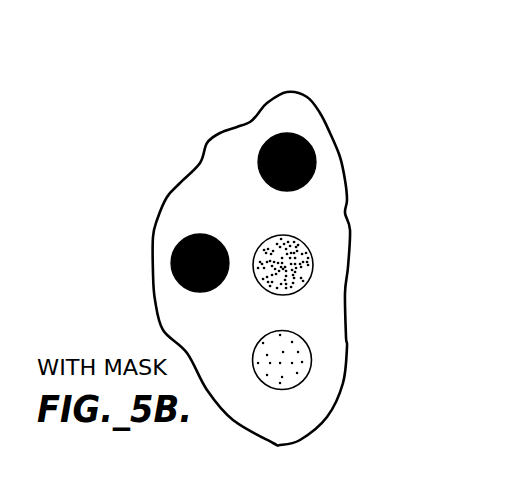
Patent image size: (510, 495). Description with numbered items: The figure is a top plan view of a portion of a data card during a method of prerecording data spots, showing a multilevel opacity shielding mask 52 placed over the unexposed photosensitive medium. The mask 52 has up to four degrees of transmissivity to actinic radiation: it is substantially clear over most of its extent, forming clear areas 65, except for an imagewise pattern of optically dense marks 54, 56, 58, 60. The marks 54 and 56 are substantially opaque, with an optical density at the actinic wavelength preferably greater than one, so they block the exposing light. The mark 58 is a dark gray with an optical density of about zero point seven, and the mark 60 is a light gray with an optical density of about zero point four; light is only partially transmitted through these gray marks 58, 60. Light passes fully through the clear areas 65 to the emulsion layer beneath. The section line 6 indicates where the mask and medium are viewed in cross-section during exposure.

The multilevel opacity shielding mask 52 is at (202, 160).
The optically dense mark 54 is at (172, 251).
The optically dense mark 56 is at (260, 148).
The dark gray mark 58 is at (263, 289).
The light gray mark 60 is at (252, 360).
The clear areas 65 is at (250, 410).
The section line 6- 6 is at (286, 107).